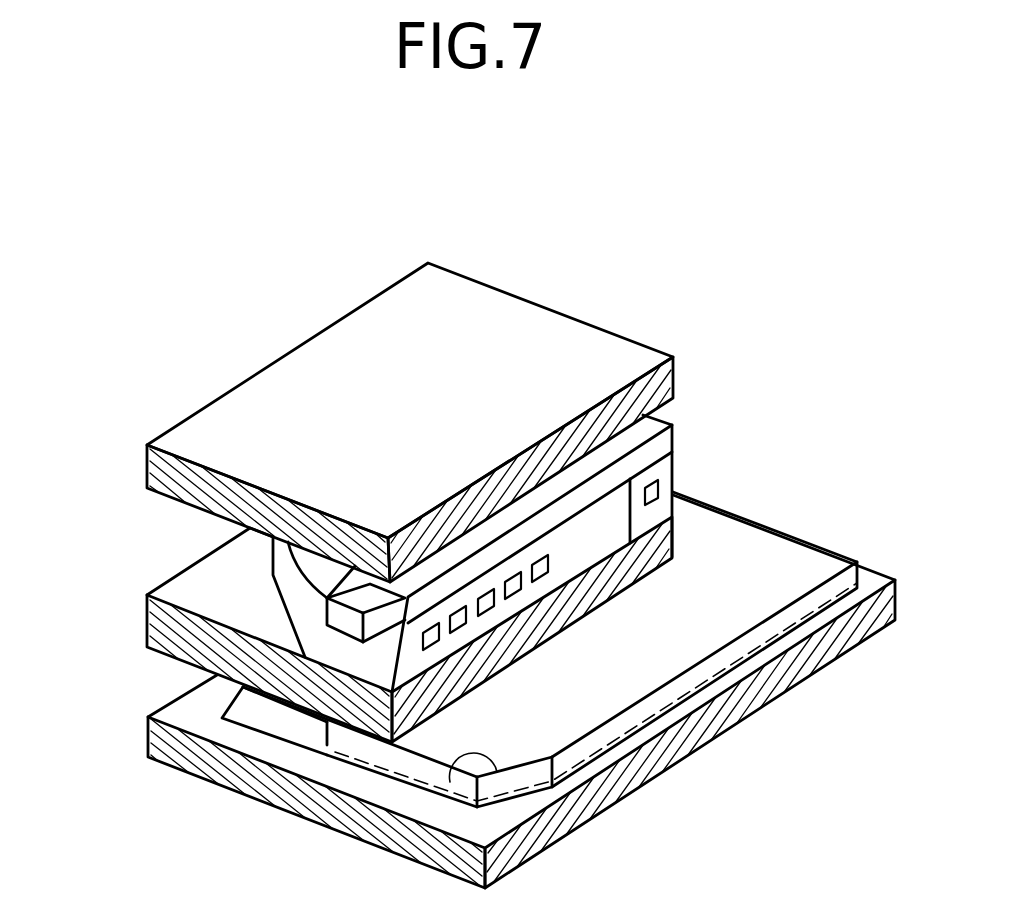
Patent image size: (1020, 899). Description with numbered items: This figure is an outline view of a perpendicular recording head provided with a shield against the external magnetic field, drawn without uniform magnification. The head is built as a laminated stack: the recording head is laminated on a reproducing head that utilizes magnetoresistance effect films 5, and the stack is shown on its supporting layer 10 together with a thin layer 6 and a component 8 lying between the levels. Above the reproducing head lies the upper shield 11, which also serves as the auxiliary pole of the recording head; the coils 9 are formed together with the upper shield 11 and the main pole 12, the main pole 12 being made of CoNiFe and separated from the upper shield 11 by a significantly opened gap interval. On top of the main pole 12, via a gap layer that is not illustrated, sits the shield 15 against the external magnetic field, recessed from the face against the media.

The magnetoresistance effect film 5 is at (350, 748).
The insulating layer 6 is at (447, 790).
The movable member 8 is at (287, 565).
The coils 9 is at (547, 558).
The substrate 10 is at (603, 803).
The upper shield 11 is at (160, 636).
The main pole 12 is at (328, 615).
The shield against the external magnetic field 15 is at (245, 457).